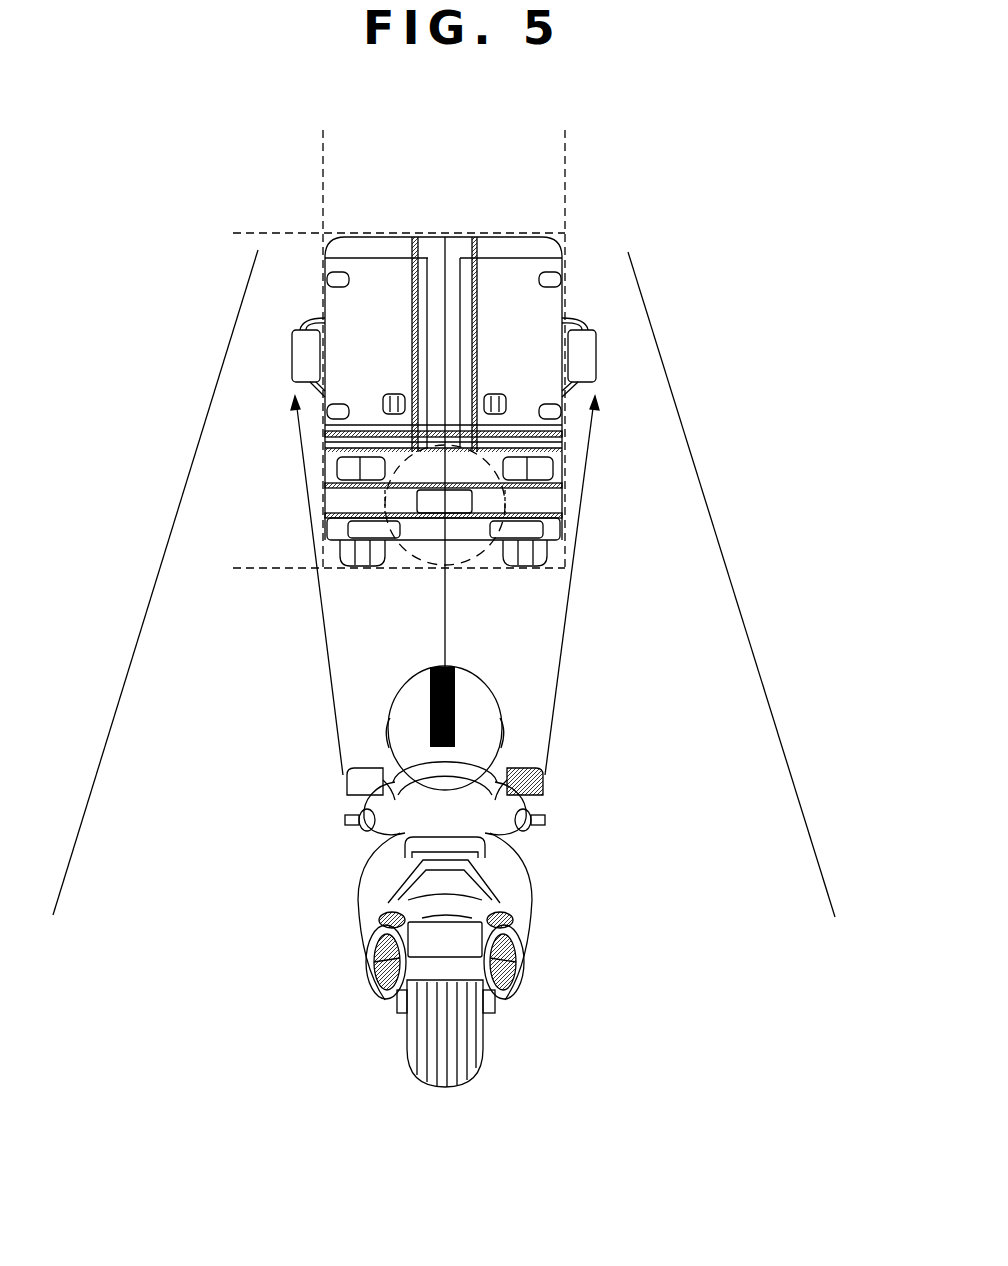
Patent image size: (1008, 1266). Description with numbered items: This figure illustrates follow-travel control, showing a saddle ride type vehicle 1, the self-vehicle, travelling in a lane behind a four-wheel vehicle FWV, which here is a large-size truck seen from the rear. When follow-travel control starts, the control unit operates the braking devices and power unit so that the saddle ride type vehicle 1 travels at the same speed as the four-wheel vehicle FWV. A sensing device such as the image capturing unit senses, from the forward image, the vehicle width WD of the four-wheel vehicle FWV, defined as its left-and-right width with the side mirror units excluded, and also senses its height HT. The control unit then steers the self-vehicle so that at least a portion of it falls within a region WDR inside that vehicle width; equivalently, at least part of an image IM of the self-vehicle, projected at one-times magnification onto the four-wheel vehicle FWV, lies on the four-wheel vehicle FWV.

The saddle ride type vehicle 1 is at (512, 1037).
The region within the vehicle width WDR is at (566, 465).
The four-wheel vehicle FWV is at (578, 258).
The image of the self-vehicle IM is at (455, 568).
The vehicle width WD is at (563, 187).
The height HT is at (277, 236).